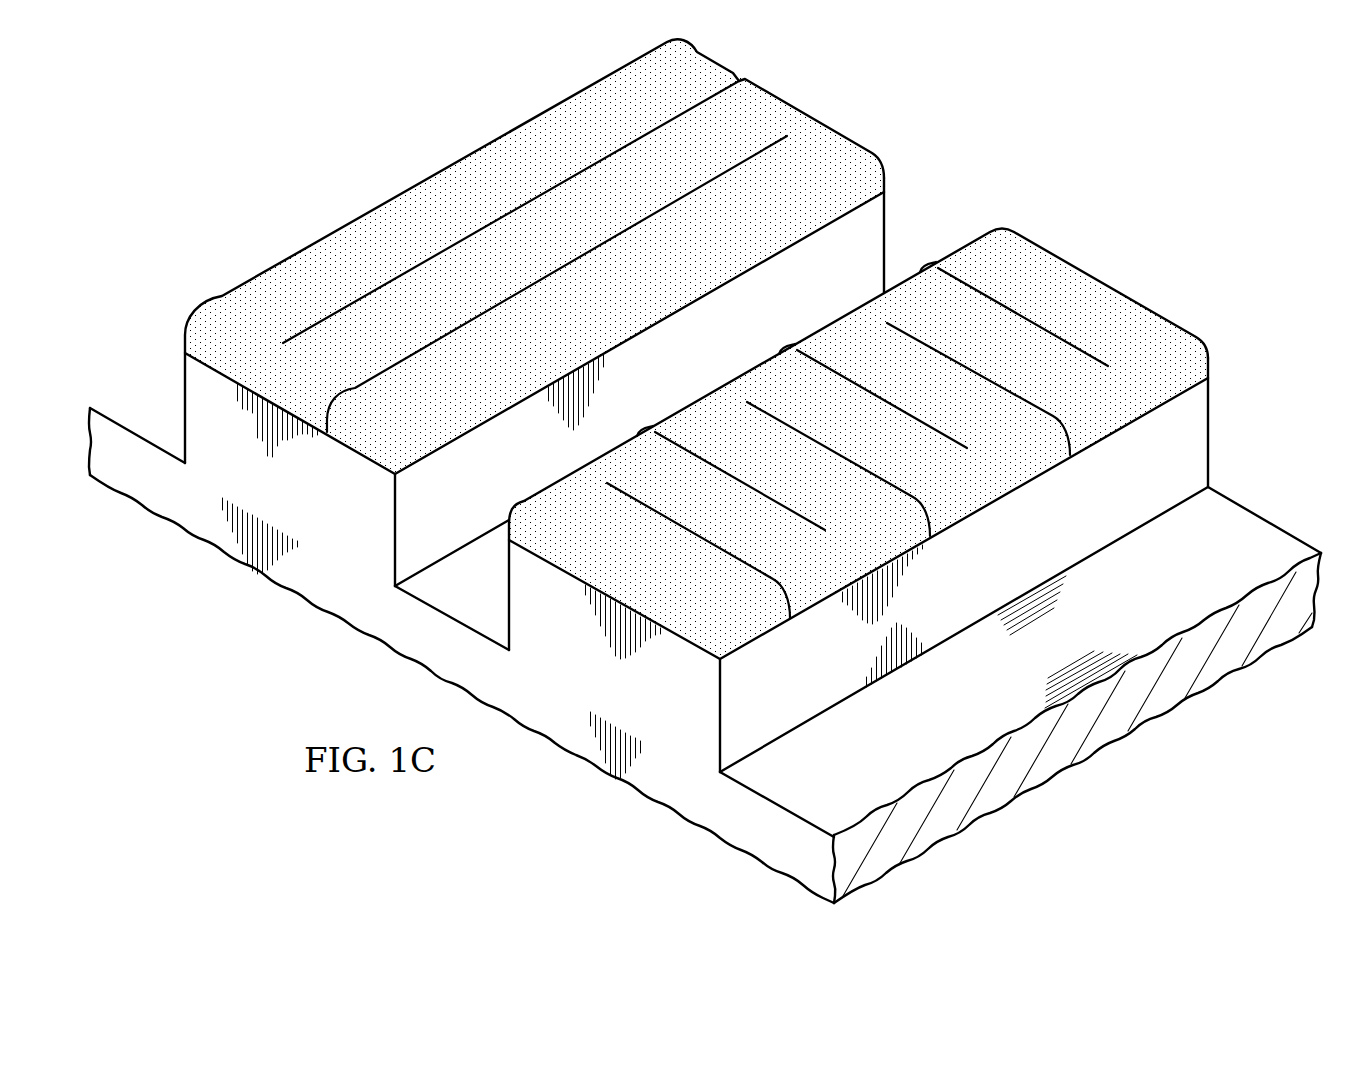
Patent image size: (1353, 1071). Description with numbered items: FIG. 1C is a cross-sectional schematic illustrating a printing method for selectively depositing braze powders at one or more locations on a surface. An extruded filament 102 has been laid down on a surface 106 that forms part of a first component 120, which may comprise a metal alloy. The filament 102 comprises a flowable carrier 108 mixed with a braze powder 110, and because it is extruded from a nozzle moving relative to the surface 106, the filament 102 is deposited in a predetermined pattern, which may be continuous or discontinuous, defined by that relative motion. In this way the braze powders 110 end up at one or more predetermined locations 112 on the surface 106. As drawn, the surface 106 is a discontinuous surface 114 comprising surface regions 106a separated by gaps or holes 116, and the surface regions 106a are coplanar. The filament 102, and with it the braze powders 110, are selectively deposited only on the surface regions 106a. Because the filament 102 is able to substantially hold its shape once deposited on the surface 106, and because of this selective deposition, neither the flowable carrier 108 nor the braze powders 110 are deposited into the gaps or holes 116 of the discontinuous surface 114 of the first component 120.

The filament 102 is at (418, 188).
The surface 106 is at (1066, 153).
The surface regions 106a is at (203, 369).
The flowable carrier 108 is at (803, 118).
The braze powder 110 is at (478, 158).
The predetermined locations 112 is at (772, 72).
The discontinuous surface 114 is at (1020, 629).
The gaps or holes 116 is at (916, 196).
The first component 120 is at (366, 620).